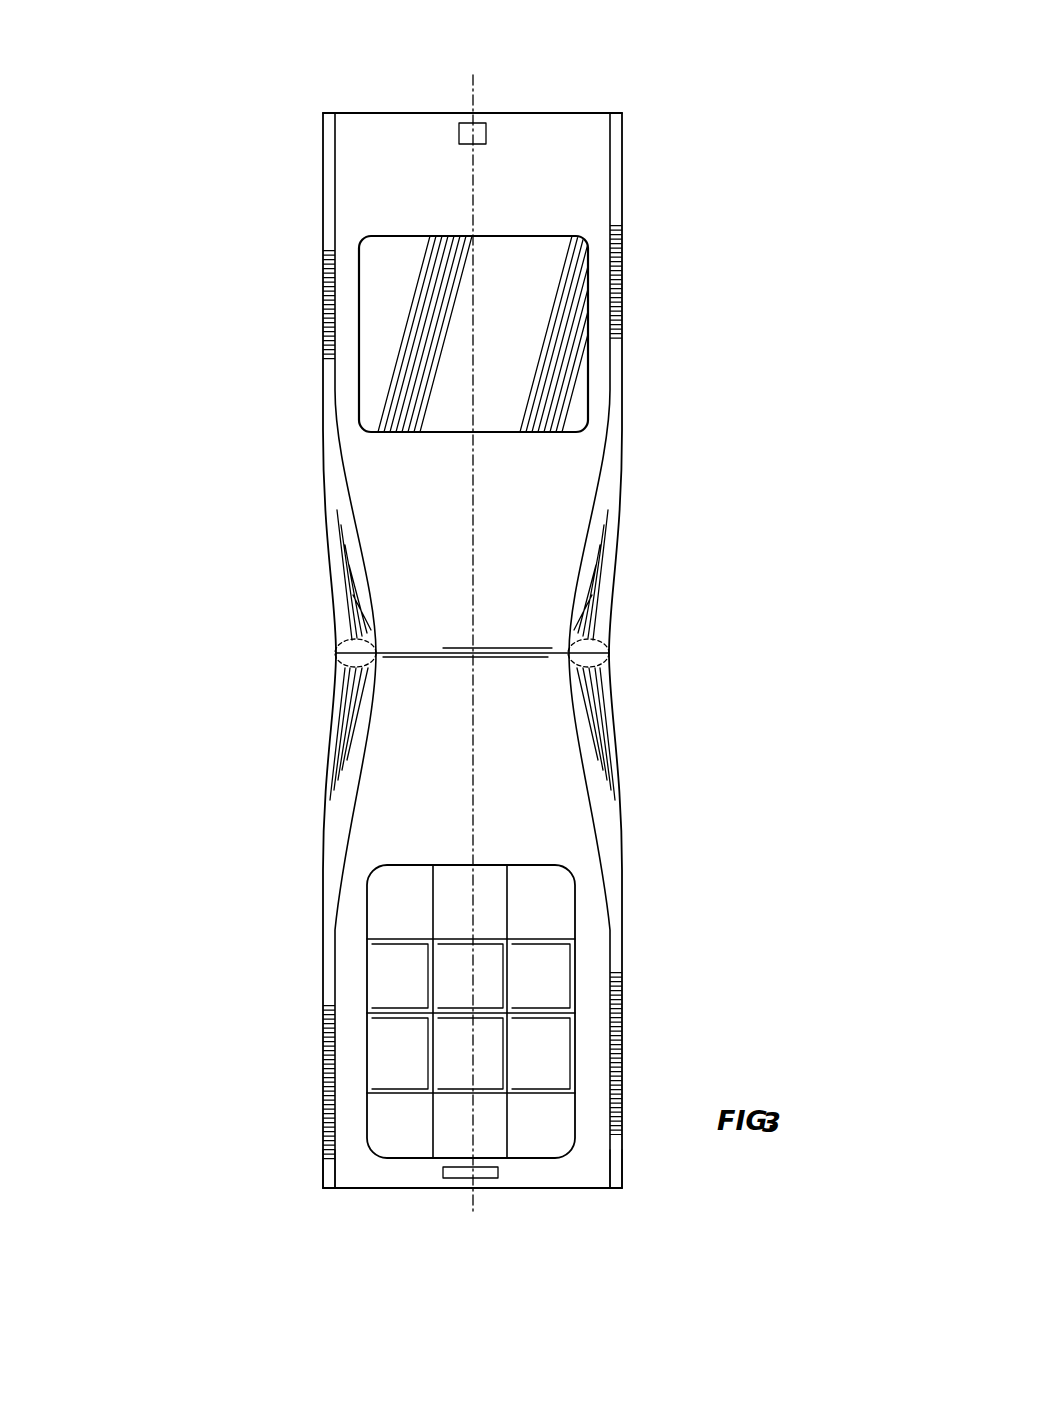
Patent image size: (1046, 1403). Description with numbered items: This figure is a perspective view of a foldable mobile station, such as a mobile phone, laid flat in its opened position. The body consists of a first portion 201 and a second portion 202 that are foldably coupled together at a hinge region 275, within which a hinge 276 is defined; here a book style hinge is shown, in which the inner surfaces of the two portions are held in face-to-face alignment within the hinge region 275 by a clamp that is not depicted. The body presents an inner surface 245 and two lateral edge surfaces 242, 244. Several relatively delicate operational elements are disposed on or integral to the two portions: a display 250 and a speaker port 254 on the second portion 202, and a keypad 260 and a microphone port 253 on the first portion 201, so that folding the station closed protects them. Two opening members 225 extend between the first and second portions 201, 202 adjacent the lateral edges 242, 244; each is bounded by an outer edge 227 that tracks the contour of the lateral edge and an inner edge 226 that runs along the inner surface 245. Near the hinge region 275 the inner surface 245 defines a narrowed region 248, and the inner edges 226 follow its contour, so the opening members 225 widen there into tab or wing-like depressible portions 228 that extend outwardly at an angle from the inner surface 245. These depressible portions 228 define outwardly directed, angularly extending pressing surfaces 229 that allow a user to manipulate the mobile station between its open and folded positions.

The first portion 201 is at (551, 1180).
The second portion 202 is at (374, 142).
The opening members 225 is at (335, 835).
The inner edges 226 is at (335, 1188).
The outer edges 227 is at (322, 1189).
The depressible portions 228 is at (363, 692).
The pressing surfaces 229 is at (343, 641).
The lateral edge surface 242 is at (624, 1012).
The lateral edge surface 244 is at (319, 1008).
The inner surface 245 is at (436, 757).
The narrowed region 248 is at (445, 583).
The display 250 is at (543, 286).
The microphone port 253 is at (453, 1180).
The speaker port 254 is at (478, 137).
The keypad 260 is at (538, 895).
The hinge region 275 is at (641, 651).
The hinge 276 is at (427, 651).